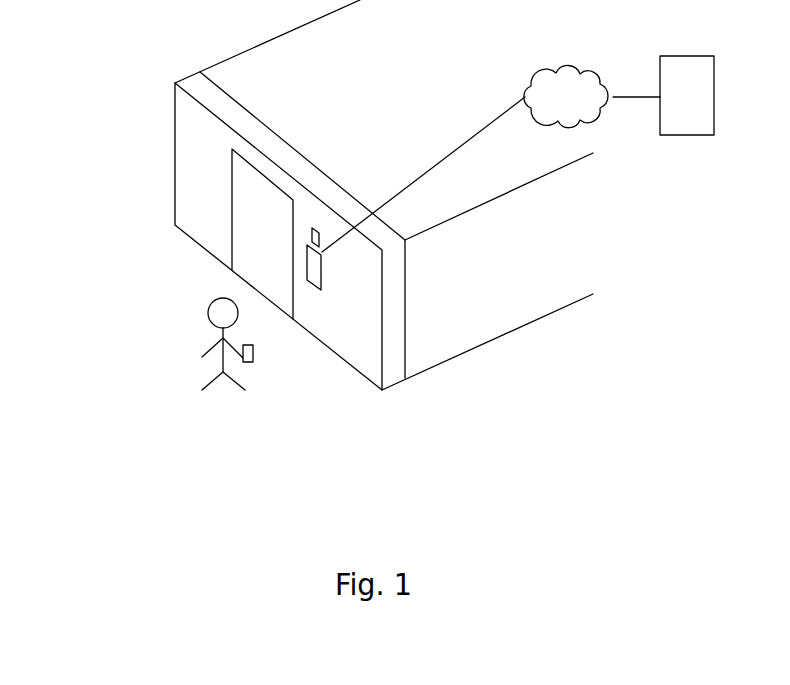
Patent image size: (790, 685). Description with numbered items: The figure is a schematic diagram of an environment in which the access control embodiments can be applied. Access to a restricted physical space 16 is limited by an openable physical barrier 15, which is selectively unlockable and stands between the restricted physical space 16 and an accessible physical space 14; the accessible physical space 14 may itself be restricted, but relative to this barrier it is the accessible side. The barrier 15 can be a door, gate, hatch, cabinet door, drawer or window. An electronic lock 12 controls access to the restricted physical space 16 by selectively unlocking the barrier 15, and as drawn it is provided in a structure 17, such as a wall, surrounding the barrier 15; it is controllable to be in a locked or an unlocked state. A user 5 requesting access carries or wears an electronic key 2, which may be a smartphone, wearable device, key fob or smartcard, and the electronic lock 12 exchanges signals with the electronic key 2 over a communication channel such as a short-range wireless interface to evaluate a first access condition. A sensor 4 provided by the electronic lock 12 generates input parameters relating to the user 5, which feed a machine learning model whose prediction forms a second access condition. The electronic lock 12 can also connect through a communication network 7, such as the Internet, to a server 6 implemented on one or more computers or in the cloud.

The accessible physical space 14 is at (61, 120).
The restricted physical space 16 is at (345, 105).
The structure 17 is at (338, 300).
The physical barrier 15 is at (250, 265).
The sensor 4 is at (316, 228).
The electronic lock 12 is at (318, 289).
The communication network 7 is at (577, 109).
The server 6 is at (695, 109).
The user 5 is at (222, 364).
The electronic key 2 is at (249, 363).